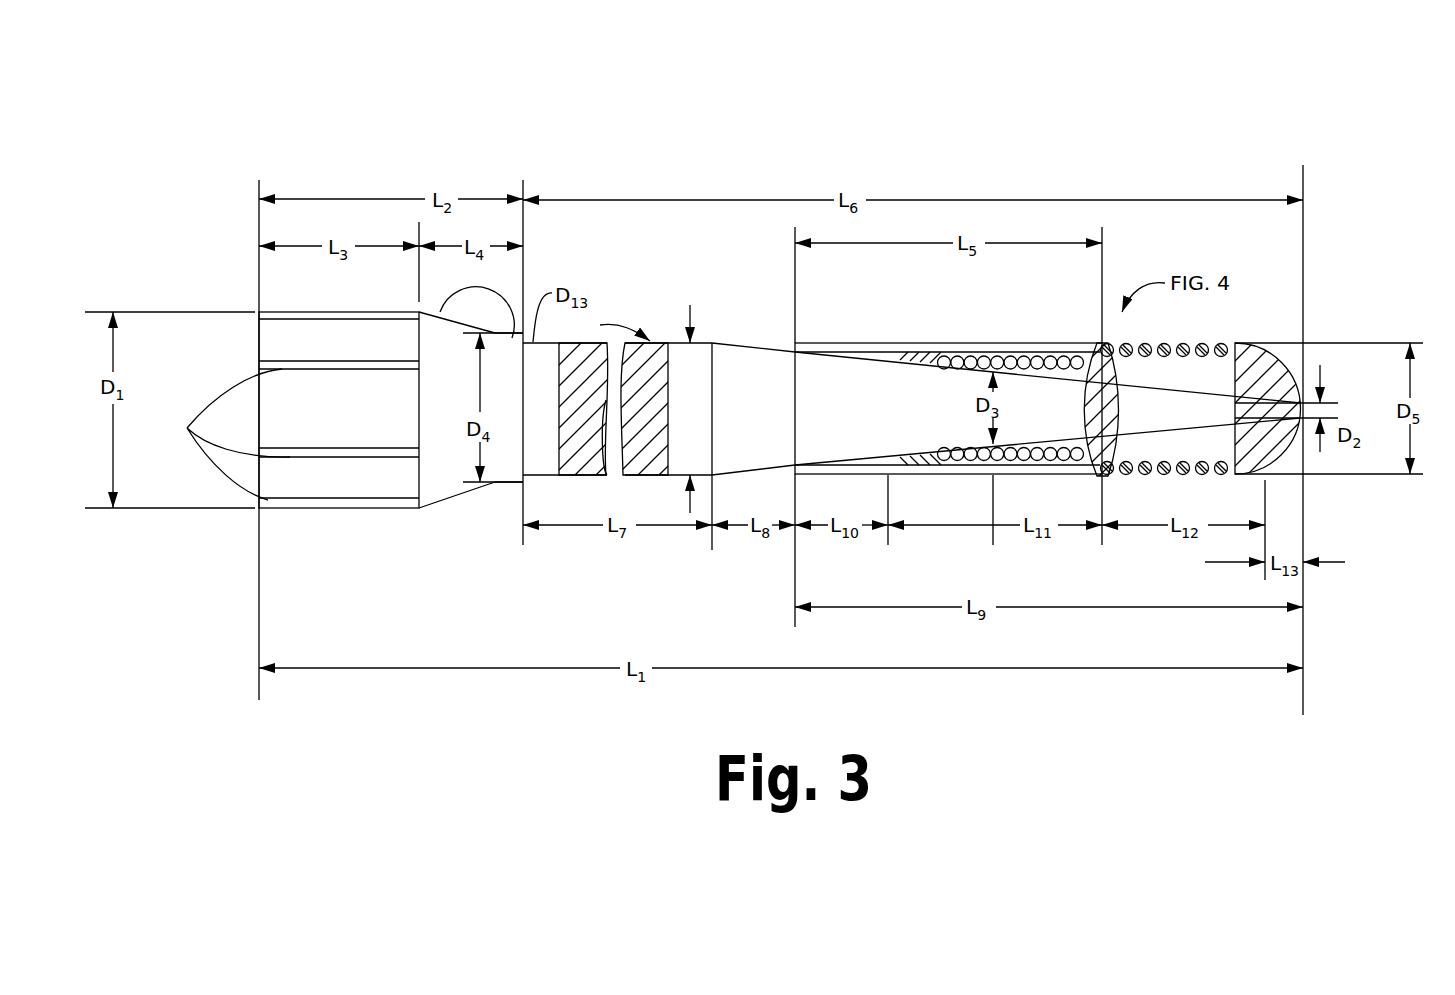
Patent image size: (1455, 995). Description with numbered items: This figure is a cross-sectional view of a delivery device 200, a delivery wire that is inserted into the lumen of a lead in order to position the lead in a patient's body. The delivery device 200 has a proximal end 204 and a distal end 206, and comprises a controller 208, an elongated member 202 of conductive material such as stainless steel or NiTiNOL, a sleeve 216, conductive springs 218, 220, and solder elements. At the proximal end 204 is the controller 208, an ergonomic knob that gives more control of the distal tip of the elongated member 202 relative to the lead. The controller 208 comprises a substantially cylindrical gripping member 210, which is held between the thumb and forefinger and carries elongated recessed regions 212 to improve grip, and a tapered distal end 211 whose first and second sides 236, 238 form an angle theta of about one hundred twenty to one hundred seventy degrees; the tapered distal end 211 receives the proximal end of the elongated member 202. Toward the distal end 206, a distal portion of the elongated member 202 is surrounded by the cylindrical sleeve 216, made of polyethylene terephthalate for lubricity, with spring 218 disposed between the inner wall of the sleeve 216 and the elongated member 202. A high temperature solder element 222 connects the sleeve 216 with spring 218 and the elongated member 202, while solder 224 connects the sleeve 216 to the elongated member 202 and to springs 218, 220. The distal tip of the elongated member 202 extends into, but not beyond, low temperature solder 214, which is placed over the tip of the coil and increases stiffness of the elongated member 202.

The delivery device 200 is at (813, 118).
The elongated member 202 is at (790, 345).
The proximal end 204 is at (248, 178).
The distal end 206 is at (1353, 203).
The controller 208 is at (352, 305).
The gripping member 210 is at (285, 510).
The tapered distal end 211 is at (454, 522).
The elongated recessed regions 212 is at (218, 434).
The solder 214 is at (1272, 348).
The sleeve 216 is at (1010, 335).
The spring 218 is at (1032, 358).
The spring 220 is at (1155, 477).
The solder element 222 is at (905, 348).
The solder 224 is at (1118, 368).
The first side 236 is at (506, 340).
The second side 238 is at (430, 316).